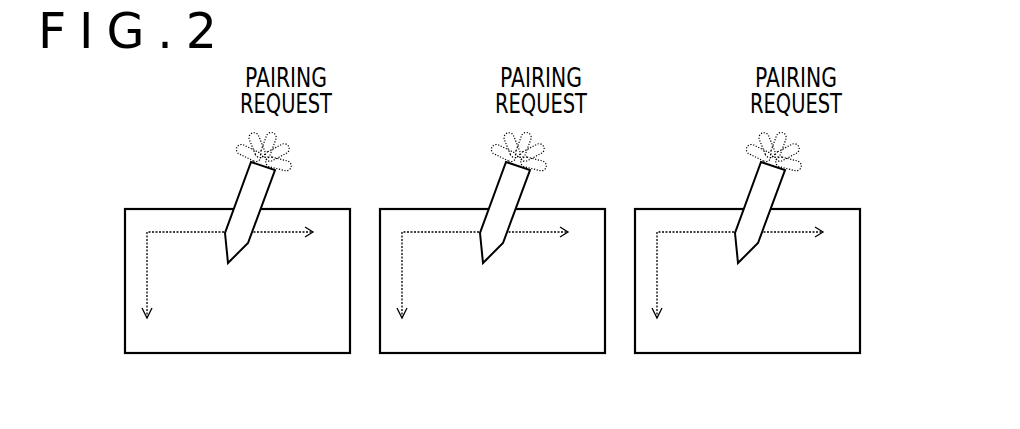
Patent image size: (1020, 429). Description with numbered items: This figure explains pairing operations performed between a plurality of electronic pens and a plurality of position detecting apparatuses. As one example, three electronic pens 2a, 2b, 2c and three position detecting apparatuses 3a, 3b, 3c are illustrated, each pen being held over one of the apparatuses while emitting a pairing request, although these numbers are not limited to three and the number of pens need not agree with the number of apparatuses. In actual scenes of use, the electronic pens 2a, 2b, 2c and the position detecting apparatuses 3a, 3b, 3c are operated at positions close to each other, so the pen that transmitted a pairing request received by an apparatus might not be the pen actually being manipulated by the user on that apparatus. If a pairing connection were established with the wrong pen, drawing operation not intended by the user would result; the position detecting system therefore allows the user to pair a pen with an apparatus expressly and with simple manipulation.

The electronic pen 2a is at (247, 188).
The electronic pen 2b is at (495, 197).
The electronic pen 2c is at (750, 197).
The position detecting apparatus 3a is at (278, 345).
The position detecting apparatus 3b is at (492, 306).
The position detecting apparatus 3c is at (747, 306).